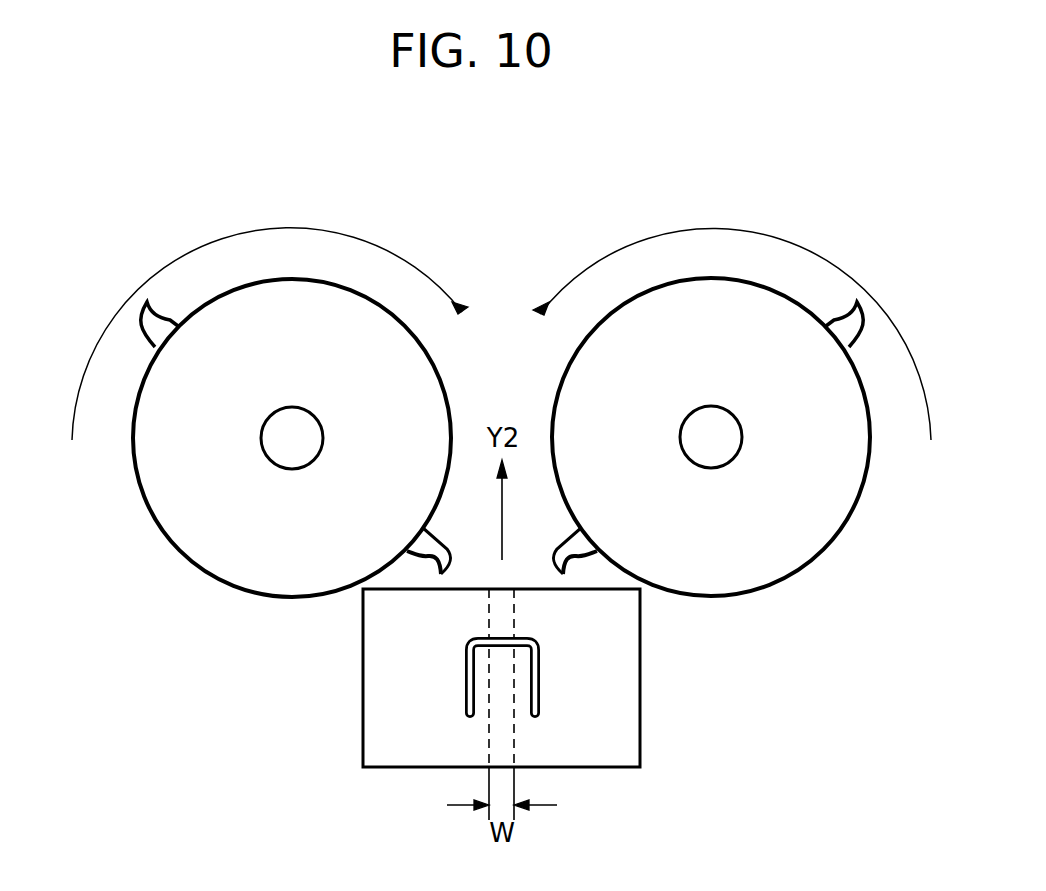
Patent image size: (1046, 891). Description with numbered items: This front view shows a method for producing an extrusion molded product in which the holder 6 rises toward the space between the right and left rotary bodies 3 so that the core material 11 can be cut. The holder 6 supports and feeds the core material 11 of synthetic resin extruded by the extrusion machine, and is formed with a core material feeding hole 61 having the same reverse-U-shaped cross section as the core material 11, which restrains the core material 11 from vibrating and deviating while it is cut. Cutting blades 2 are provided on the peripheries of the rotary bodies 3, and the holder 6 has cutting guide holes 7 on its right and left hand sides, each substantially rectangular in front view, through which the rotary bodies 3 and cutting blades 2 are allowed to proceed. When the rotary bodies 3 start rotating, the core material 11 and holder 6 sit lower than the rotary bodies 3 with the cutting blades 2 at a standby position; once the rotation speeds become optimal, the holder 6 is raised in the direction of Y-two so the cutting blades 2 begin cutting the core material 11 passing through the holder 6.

The cutting blade 2 is at (430, 545).
The rotary body 3 is at (208, 553).
The holder 6 is at (385, 735).
The cutting guide hole 7 is at (514, 604).
The core material 11 is at (536, 703).
The core material feeding hole 61 is at (466, 673).